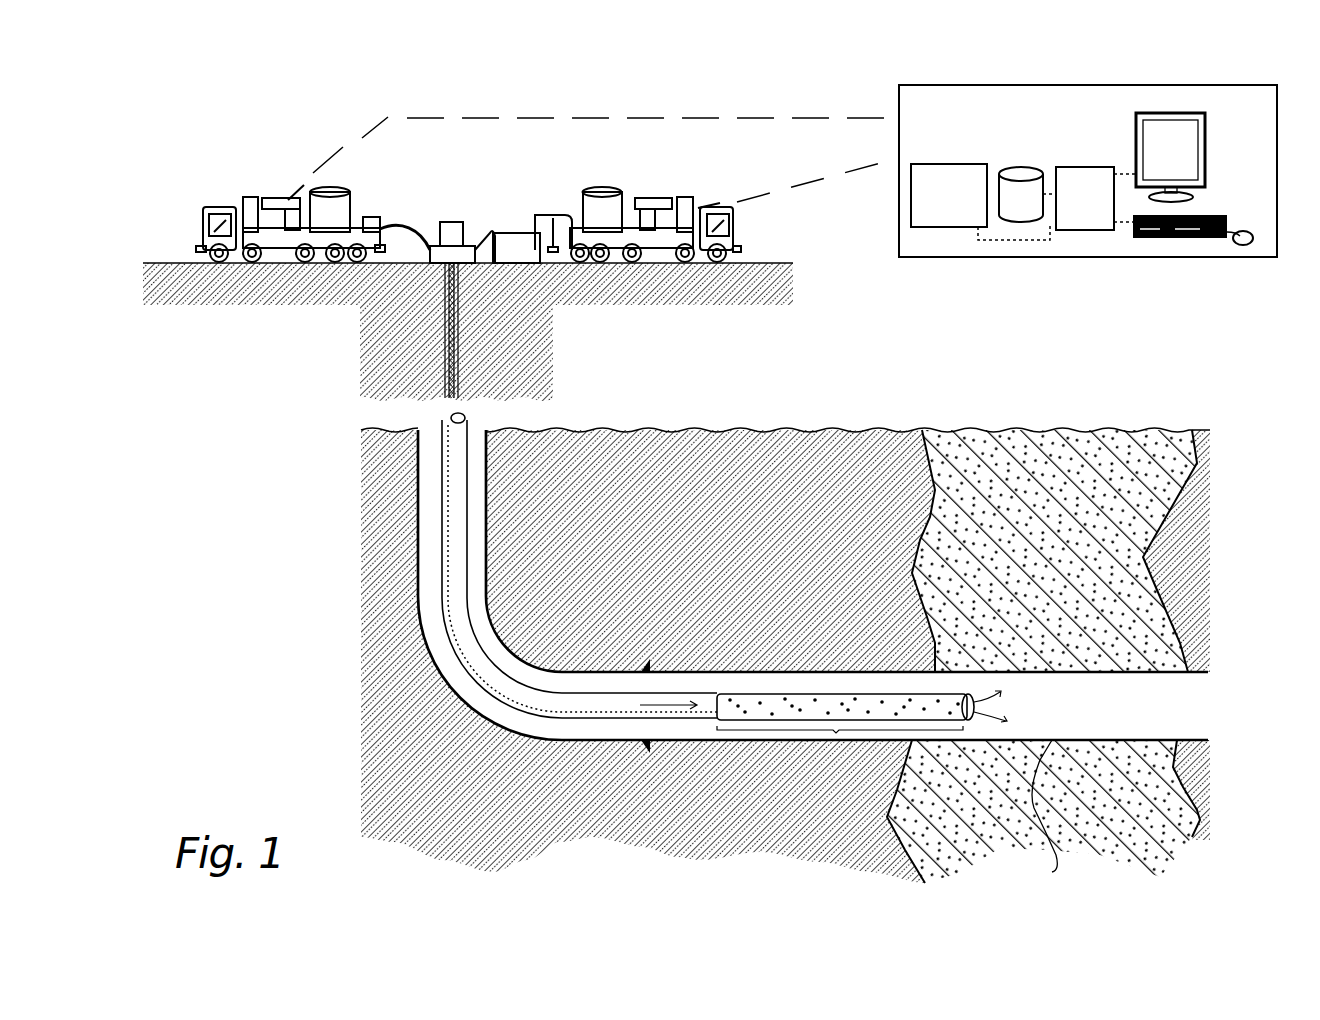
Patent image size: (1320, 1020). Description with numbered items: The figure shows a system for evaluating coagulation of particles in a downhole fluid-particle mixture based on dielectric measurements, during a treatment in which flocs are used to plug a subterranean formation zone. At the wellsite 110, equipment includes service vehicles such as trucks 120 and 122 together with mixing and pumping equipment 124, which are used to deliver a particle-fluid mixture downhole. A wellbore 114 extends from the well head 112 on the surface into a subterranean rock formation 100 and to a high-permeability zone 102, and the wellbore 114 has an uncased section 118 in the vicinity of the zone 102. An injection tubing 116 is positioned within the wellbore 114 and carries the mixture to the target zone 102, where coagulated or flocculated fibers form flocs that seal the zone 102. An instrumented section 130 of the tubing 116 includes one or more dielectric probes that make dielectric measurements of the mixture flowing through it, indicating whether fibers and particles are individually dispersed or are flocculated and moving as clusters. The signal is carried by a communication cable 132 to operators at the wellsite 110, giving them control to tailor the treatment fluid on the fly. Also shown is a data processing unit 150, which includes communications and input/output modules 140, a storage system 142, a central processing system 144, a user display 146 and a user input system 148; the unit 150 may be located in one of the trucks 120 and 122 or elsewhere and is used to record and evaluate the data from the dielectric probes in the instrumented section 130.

The subterranean rock formation 100 is at (835, 627).
The high-permeability zone 102 is at (1023, 614).
The wellsite 110 is at (346, 80).
The well head 112 is at (455, 221).
The wellbore 114 is at (444, 318).
The injection tubing 116 is at (440, 476).
The uncased section 118 is at (1052, 872).
The truck 120 is at (232, 206).
The truck 122 is at (690, 206).
The mixing and pumping equipment 124 is at (536, 259).
The instrumented section 130 is at (856, 757).
The communication cable 132 is at (440, 588).
The communications and input/output modules 140 is at (968, 209).
The storage system 142 is at (1040, 212).
The central processing system 144 is at (1104, 212).
The user display 146 is at (1189, 163).
The user input system 148 is at (1237, 202).
The data processing unit 150 is at (1088, 171).